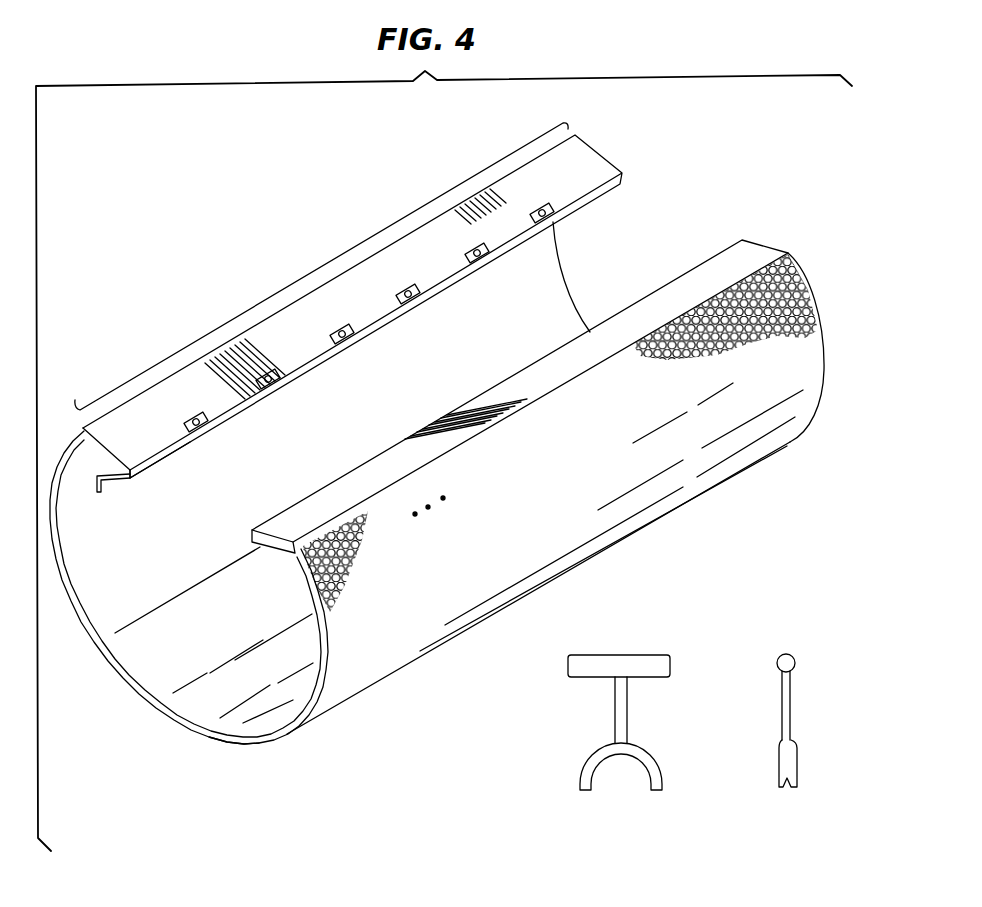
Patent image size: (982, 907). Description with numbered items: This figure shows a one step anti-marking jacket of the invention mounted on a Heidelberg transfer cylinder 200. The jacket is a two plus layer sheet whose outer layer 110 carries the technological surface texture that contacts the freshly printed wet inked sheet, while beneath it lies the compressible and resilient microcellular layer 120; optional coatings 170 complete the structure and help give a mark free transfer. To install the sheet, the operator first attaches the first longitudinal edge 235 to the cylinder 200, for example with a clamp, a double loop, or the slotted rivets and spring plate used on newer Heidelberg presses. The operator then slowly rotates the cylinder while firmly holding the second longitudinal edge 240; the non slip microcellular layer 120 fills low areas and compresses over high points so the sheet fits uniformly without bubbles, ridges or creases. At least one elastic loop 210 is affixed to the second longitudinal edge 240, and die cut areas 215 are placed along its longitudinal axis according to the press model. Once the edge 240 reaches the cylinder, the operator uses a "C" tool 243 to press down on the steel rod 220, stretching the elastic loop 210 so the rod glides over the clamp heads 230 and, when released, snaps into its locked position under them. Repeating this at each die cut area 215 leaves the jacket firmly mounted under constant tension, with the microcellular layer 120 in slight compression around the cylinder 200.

The outer layer 110 is at (353, 560).
The microcellular layer 120 is at (229, 746).
The coatings 170 is at (164, 710).
The transfer cylinder 200 is at (76, 585).
The elastic loop 210 is at (148, 449).
The die cut areas 215 is at (348, 340).
The steel rod 220 is at (100, 490).
The clamp heads 230 is at (272, 386).
The first longitudinal edge 235 is at (533, 400).
The second longitudinal edge 240 is at (300, 278).
The "C" tool 243 is at (643, 752).